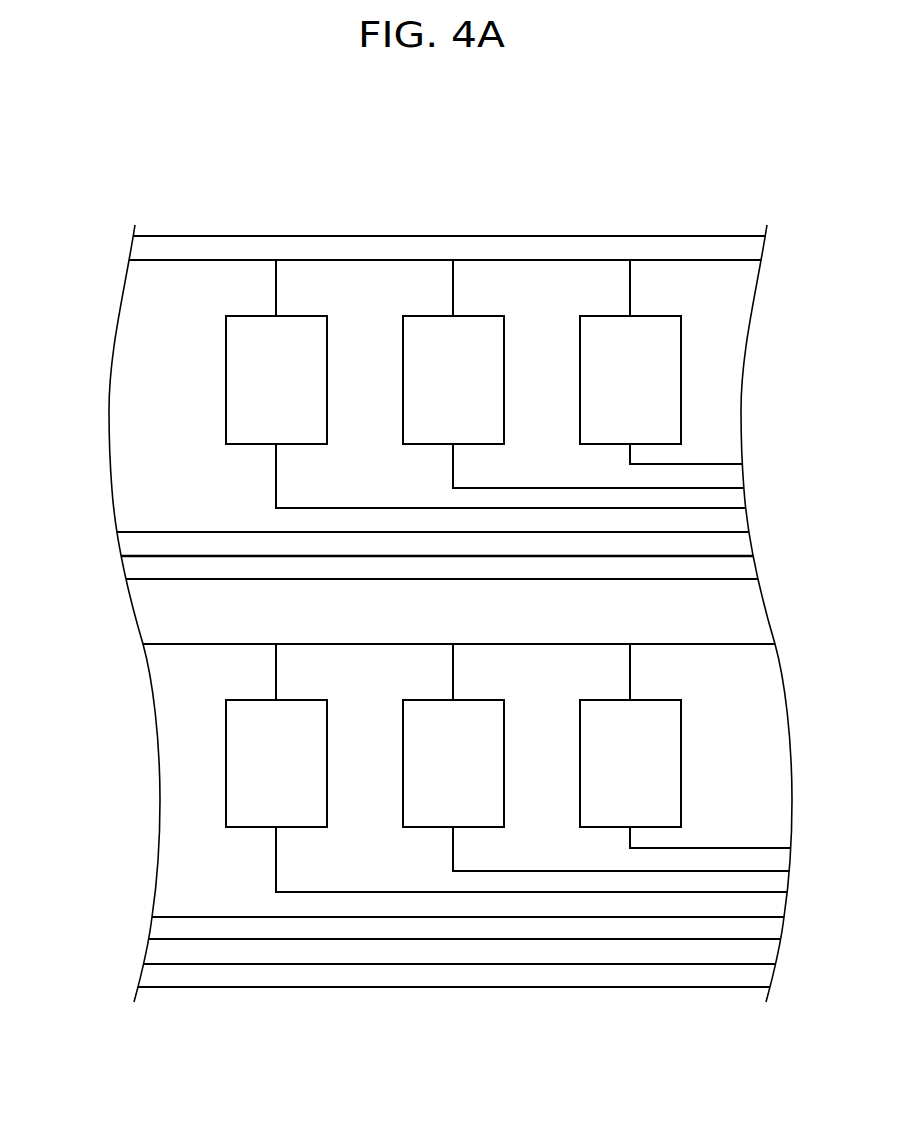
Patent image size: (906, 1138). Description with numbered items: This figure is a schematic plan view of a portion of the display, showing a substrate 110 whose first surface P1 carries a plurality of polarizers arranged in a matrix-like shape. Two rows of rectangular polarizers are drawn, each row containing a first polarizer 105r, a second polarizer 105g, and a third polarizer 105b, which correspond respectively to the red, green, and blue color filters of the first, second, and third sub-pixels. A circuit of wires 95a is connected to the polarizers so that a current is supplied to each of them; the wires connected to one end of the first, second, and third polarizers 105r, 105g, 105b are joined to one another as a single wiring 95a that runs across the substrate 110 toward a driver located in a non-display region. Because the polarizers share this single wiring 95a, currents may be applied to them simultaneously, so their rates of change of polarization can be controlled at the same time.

The substrate 110 is at (217, 236).
The wires 95a is at (276, 484).
The first surface P1 is at (187, 851).
The first polarizer 105r is at (250, 815).
The second polarizer 105g is at (435, 815).
The third polarizer 105b is at (610, 815).